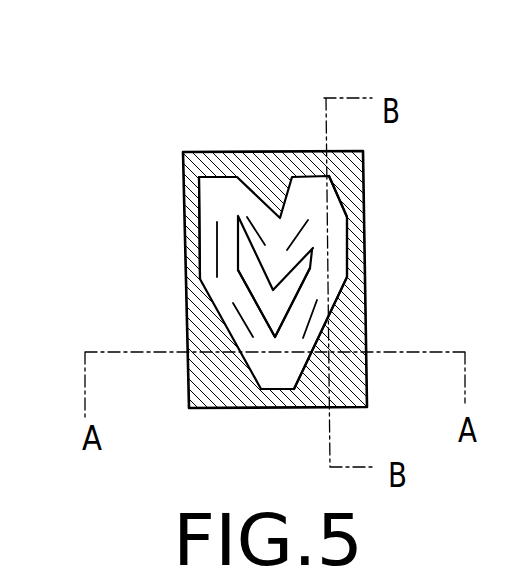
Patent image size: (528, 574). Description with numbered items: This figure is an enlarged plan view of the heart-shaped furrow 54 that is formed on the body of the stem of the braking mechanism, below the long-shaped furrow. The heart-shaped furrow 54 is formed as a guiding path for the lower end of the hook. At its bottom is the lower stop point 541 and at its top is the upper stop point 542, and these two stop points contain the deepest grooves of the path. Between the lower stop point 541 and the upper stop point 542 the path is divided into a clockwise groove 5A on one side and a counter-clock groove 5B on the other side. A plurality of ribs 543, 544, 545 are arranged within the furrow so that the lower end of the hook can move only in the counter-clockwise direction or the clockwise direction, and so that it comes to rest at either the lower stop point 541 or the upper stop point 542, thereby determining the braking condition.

The heart-shaped furrow 54 is at (312, 175).
The lower stop point 541 is at (282, 378).
The upper stop point 542 is at (268, 272).
The rib 543 is at (308, 250).
The rib 544 is at (248, 214).
The rib 545 is at (272, 351).
The clockwise groove 5A is at (333, 267).
The counter-clock groove 5B is at (203, 260).